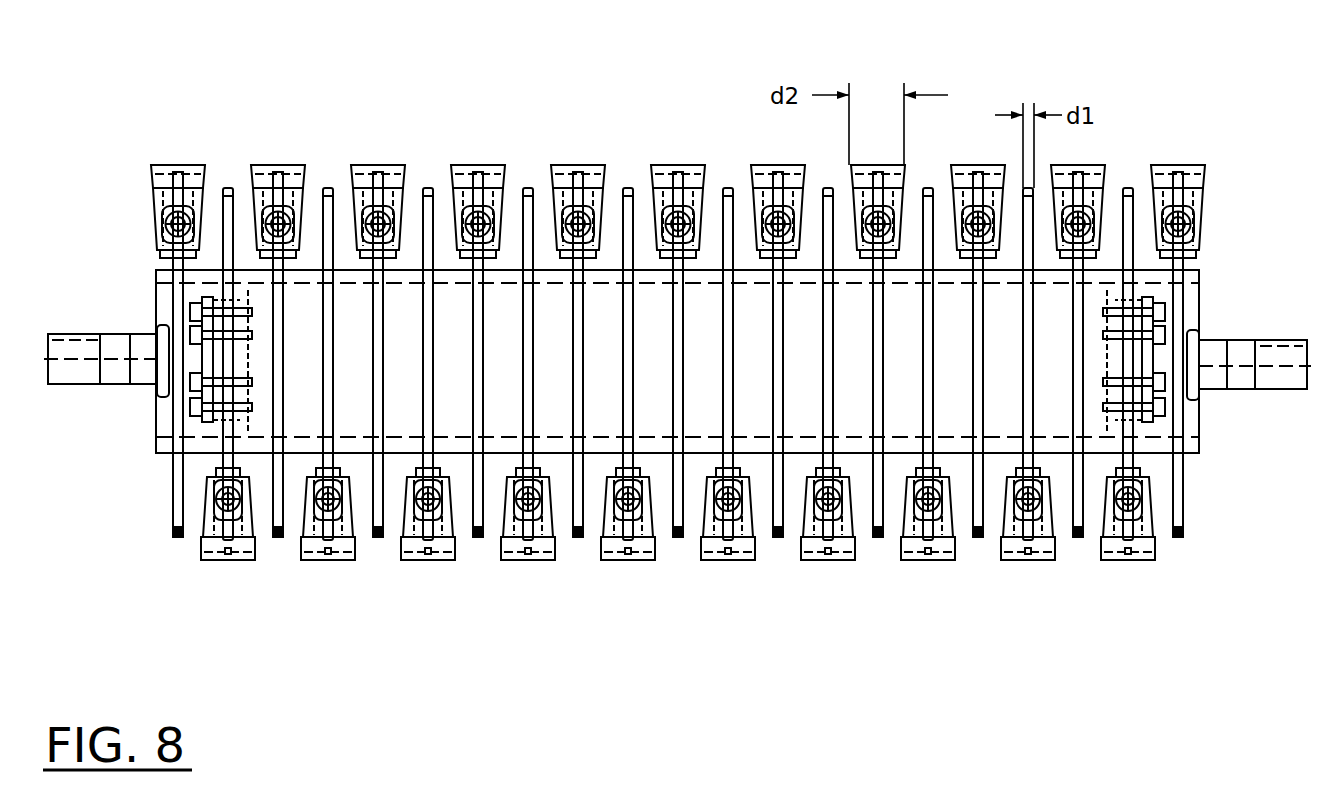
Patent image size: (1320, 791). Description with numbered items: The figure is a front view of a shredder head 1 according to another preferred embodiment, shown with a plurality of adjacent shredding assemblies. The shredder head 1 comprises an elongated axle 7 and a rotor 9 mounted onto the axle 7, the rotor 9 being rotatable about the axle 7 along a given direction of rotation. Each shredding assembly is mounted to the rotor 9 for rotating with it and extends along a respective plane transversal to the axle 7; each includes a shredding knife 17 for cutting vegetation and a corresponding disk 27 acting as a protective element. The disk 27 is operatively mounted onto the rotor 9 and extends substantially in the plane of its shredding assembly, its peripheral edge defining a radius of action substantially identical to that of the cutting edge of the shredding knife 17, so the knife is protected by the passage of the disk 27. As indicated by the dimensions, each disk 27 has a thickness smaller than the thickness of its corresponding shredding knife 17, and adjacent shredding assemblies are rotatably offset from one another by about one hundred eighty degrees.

The shredder head 1 is at (96, 244).
The elongated axle 7 is at (1213, 390).
The rotor 9 is at (1210, 303).
The shredding knife 17 is at (663, 155).
The disk 27 is at (574, 548).